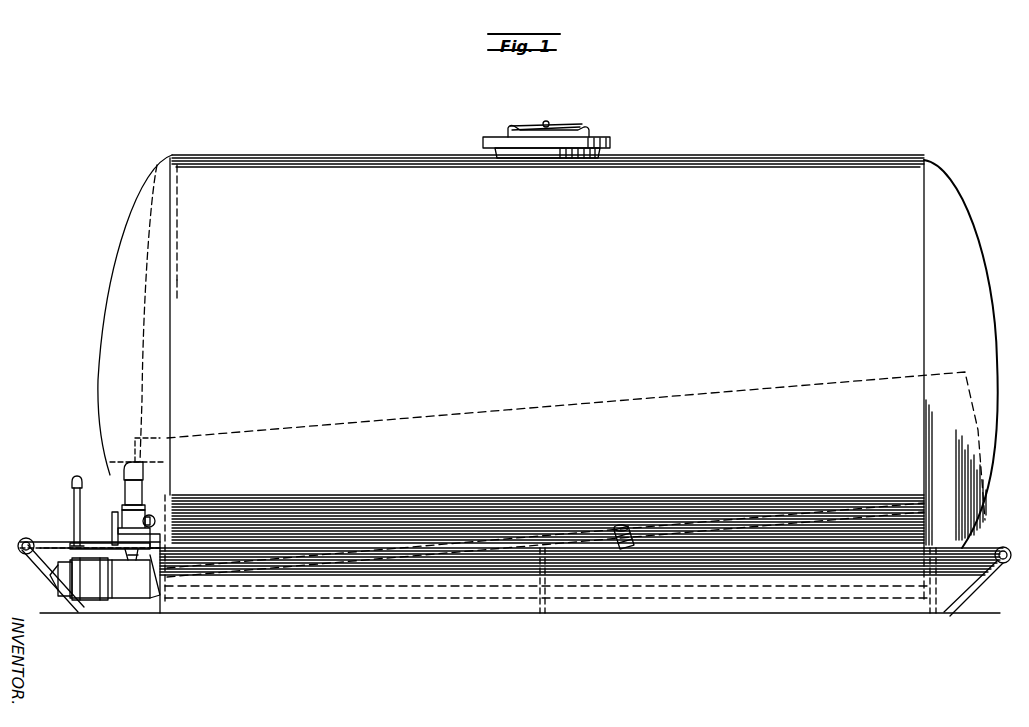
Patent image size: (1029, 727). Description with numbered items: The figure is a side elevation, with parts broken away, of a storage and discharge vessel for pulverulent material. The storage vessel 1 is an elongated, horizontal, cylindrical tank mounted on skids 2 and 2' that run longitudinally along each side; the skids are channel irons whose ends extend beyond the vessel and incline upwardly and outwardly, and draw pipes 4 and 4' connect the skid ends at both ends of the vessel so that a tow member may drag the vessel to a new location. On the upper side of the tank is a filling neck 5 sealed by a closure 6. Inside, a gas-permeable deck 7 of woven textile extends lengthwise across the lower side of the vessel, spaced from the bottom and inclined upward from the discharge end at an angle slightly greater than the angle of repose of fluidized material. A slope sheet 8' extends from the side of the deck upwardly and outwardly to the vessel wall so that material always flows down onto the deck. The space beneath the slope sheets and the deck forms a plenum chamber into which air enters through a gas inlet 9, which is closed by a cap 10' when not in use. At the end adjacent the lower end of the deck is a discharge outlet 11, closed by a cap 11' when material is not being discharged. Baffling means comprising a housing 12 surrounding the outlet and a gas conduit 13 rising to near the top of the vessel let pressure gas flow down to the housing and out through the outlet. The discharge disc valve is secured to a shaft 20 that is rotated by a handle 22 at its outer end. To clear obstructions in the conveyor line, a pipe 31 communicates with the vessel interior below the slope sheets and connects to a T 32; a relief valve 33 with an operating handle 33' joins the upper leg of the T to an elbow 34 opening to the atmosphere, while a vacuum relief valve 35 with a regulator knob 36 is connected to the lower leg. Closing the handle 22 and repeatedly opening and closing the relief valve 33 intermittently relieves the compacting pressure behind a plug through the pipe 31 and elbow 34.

The storage vessel 1 is at (809, 157).
The skid 2 is at (511, 572).
The skid 2' is at (193, 599).
The draw pipe 4 is at (17, 529).
The draw pipe 4' is at (1005, 524).
The filling neck 5 is at (600, 146).
The closure 6 is at (560, 130).
The gas-permeable deck 7 is at (792, 514).
The slope sheet 8' is at (576, 446).
The gas inlet 9 is at (618, 526).
The cap 10' is at (545, 528).
The discharge outlet 11 is at (116, 604).
The cap 11' is at (58, 606).
The housing 12 is at (112, 452).
The gas conduit 13 is at (178, 280).
The shaft 20 is at (96, 542).
The handle 22 is at (72, 500).
The pipe 31 is at (160, 538).
The T 32 is at (148, 516).
The relief valve 33 is at (114, 485).
The operating handle 33' is at (118, 514).
The elbow 34 is at (130, 466).
The vacuum relief valve 35 is at (110, 579).
The regulator knob 36 is at (140, 573).